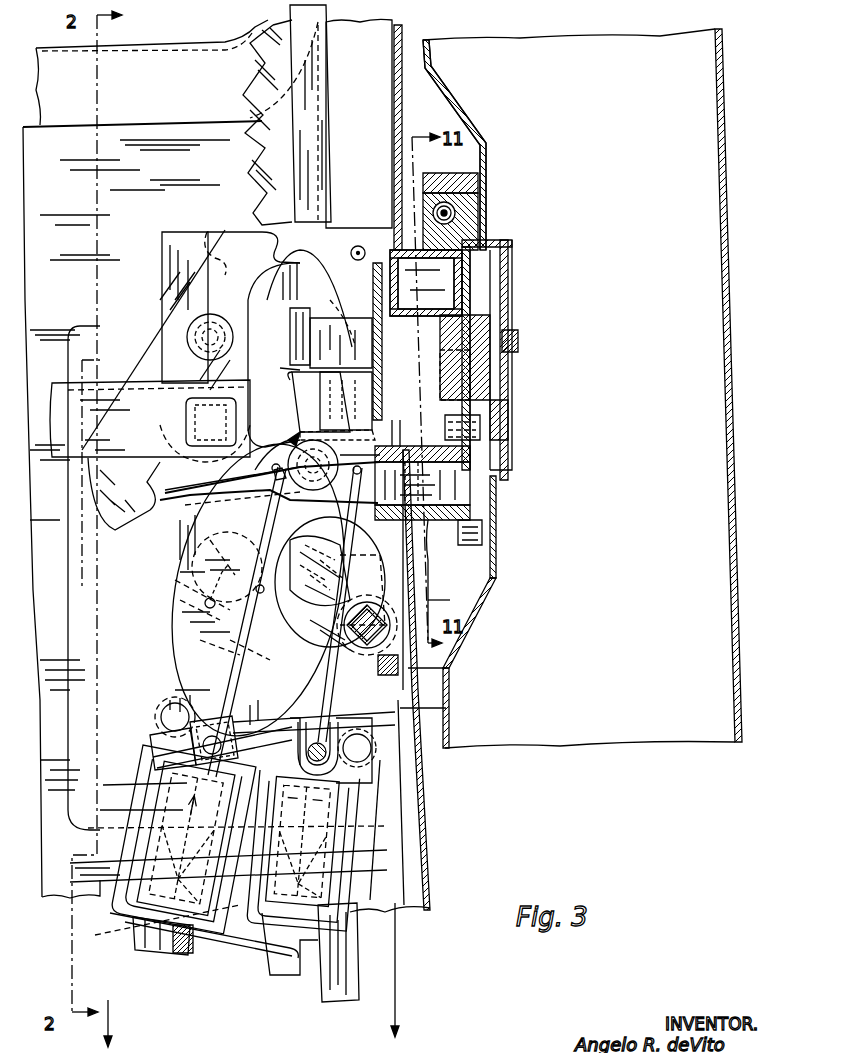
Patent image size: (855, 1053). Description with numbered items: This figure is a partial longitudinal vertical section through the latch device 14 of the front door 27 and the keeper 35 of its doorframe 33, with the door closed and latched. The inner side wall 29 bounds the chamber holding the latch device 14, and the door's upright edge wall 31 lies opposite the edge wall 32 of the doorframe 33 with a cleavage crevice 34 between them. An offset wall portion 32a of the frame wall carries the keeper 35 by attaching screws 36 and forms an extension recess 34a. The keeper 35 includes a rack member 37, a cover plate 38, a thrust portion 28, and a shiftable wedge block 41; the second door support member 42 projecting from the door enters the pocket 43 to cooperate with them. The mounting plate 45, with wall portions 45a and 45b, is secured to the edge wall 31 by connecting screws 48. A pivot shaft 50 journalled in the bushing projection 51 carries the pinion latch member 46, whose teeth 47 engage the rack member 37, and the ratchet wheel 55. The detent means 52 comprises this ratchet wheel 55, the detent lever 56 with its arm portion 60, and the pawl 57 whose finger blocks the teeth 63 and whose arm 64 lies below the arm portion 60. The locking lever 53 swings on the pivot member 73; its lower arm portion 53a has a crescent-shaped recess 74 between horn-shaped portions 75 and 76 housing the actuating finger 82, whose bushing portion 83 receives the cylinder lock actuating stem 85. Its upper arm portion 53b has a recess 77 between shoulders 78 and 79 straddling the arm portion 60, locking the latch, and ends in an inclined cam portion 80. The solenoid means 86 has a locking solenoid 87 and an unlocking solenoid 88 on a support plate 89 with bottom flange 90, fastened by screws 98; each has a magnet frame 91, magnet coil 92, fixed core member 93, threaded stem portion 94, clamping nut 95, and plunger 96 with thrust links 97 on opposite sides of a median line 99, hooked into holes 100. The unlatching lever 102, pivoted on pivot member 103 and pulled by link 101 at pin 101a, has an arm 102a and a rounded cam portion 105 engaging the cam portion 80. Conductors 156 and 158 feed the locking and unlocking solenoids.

The latch device 14 is at (165, 542).
The front door 27 is at (424, 808).
The thrust portion 28 is at (498, 305).
The inner side wall 29 is at (48, 738).
The edge wall 31 is at (426, 866).
The edge wall 32 is at (445, 750).
The offset wall portion 32a is at (497, 555).
The doorframe 33 is at (580, 748).
The cleavage crevice 34 is at (447, 688).
The extension recess 34a is at (490, 590).
The keeper 35 is at (470, 165).
The attaching screws 36 is at (514, 352).
The rack member 37 is at (498, 410).
The cover plate 38 is at (492, 380).
The wedge block 41 is at (470, 225).
The second door support member 42 is at (475, 268).
The pocket 43 is at (488, 285).
The mounting plate 45 is at (346, 240).
The wall portion 45a is at (426, 283).
The wall portion 45b is at (190, 222).
The latch member 46 is at (485, 530).
The teeth 47 is at (485, 430).
The connecting screws 48 is at (448, 668).
The pivot shaft 50 is at (450, 522).
The bushing projection 51 is at (422, 522).
The detent means 52 is at (355, 420).
The locking lever 53 is at (222, 490).
The lower arm portion 53a is at (185, 600).
The upper arm portion 53b is at (290, 318).
The ratchet wheel 55 is at (398, 445).
The detent lever 56 is at (373, 280).
The pawl 57 is at (352, 385).
The arm portion 60 is at (320, 312).
The teeth 63 is at (368, 595).
The arm 64 is at (352, 320).
The pivot member 73 is at (278, 505).
The crescent-shaped recess 74 is at (258, 542).
The horn-shaped portion 75 is at (370, 556).
The horn-shaped portion 76 is at (447, 712).
The recess 77 is at (292, 362).
The shoulder 78 is at (300, 380).
The shoulder 79 is at (322, 337).
The inclined cam portion 80 is at (280, 270).
The actuating finger 82 is at (323, 562).
The bushing portion 83 is at (374, 672).
The actuating stem 85 is at (436, 610).
The solenoid means 86 is at (148, 758).
The locking solenoid 87 is at (165, 785).
The unlocking solenoid 88 is at (355, 840).
The support plate 89 is at (100, 810).
The bottom flange 90 is at (238, 935).
The magnet frame 91 is at (135, 862).
The magnet coil 92 is at (145, 882).
The fixed core member 93 is at (192, 938).
The threaded stem portion 94 is at (110, 934).
The clamping nut 95 is at (186, 955).
The plunger 96 is at (80, 832).
The thrust links 97 is at (240, 630).
The screws 98 is at (165, 710).
The median line 99 is at (290, 655).
The holes 100 is at (292, 438).
The link 101 is at (100, 380).
The pin 101a is at (192, 420).
The unlatching lever 102 is at (170, 300).
The arm 102a is at (118, 530).
The pivot member 103 is at (210, 314).
The rounded cam portion 105 is at (282, 230).
The conductor 156 is at (110, 1010).
The conductor 158 is at (392, 1012).